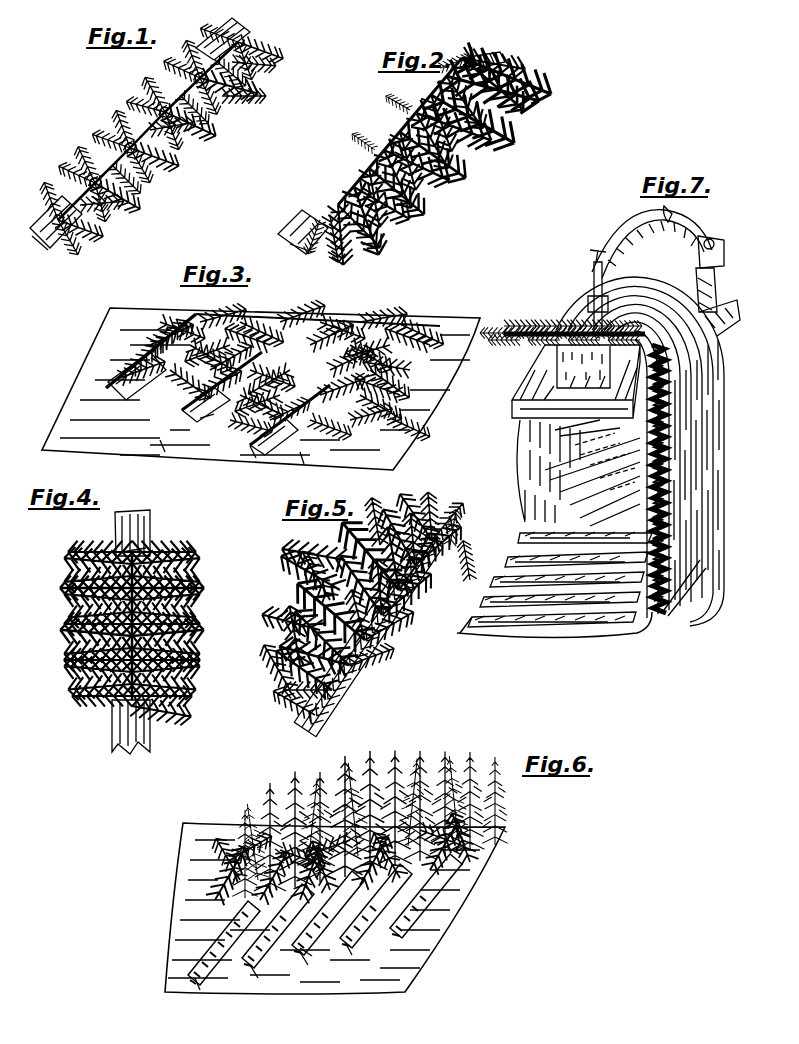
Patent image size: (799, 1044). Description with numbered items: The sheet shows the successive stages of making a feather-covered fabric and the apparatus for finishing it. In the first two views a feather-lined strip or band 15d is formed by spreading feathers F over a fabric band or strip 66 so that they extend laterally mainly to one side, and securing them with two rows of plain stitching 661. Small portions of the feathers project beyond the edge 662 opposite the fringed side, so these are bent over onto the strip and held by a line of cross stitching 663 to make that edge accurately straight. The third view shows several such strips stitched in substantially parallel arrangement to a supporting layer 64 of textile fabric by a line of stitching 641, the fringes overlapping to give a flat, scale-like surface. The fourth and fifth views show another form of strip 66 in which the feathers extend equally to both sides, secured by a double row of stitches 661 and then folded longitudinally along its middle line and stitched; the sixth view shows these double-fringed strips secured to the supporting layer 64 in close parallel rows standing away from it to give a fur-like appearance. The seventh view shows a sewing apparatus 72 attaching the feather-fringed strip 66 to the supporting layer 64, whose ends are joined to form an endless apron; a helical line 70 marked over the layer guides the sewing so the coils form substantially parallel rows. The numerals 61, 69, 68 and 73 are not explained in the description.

In FIG. 1, the rows of plain stitching 661 is at (236, 44).
In FIG. 3, the rows of plain stitching 661 is at (210, 418).
In FIG. 4, the rows of plain stitching 661 is at (140, 562).
In FIG. 5, the rows of plain stitching 661 is at (434, 540).
In FIG. 6, the rows of plain stitching 661 is at (312, 952).
In FIG. 1, the edge 662 is at (38, 232).
In FIG. 2, the edge 662 is at (290, 246).
In FIG. 3, the edge 662 is at (108, 380).
In FIG. 2, the line of cross stitching 663 is at (462, 60).
In FIG. 3, the line of cross stitching 663 is at (115, 356).
In FIG. 1, the band or strip 66 is at (44, 236).
In FIG. 2, the band or strip 66 is at (300, 248).
In FIG. 3, the band or strip 66 is at (118, 390).
In FIG. 7, the band or strip 66 is at (568, 322).
In FIG. 4, the band or strip 66 is at (152, 744).
In FIG. 1, the feathers F is at (160, 188).
In FIG. 2, the feathers F is at (470, 174).
In FIG. 3, the feathers F is at (398, 364).
In FIG. 4, the feathers F is at (186, 620).
In FIG. 5, the feathers F is at (346, 580).
In FIG. 6, the feathers F is at (300, 810).
In FIG. 2, the feather-lined strip or band 15d is at (420, 112).
In FIG. 3, the feather-lined strip or band 15d is at (200, 318).
In FIG. 7, the feather-lined strip or band 15d is at (548, 330).
In FIG. 4, the feather-lined strip or band 15d is at (112, 611).
In FIG. 3, the supporting layer 64 is at (80, 446).
In FIG. 7, the supporting layer 64 is at (536, 500).
In FIG. 6, the supporting layer 64 is at (402, 980).
In FIG. 3, the line of stitching 641 is at (66, 420).
In FIG. 6, the line of stitching 641 is at (366, 980).
In FIG. 6, the slat 61 is at (252, 964).
In FIG. 5, the stem strip 69 is at (308, 726).
In FIG. 6, the stem strip 69 is at (196, 976).
In FIG. 7, the drum 68 is at (668, 446).
In FIG. 7, the helical line 70 is at (680, 582).
In FIG. 7, the sewing apparatus 72 is at (700, 244).
In FIG. 7, the trough 73 is at (548, 472).